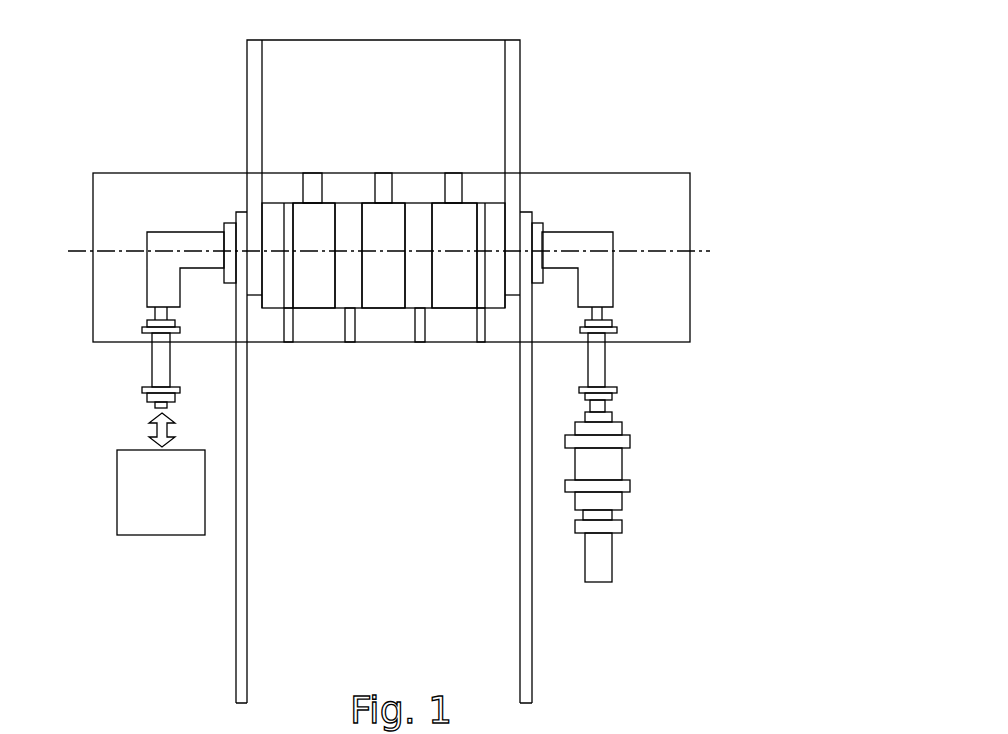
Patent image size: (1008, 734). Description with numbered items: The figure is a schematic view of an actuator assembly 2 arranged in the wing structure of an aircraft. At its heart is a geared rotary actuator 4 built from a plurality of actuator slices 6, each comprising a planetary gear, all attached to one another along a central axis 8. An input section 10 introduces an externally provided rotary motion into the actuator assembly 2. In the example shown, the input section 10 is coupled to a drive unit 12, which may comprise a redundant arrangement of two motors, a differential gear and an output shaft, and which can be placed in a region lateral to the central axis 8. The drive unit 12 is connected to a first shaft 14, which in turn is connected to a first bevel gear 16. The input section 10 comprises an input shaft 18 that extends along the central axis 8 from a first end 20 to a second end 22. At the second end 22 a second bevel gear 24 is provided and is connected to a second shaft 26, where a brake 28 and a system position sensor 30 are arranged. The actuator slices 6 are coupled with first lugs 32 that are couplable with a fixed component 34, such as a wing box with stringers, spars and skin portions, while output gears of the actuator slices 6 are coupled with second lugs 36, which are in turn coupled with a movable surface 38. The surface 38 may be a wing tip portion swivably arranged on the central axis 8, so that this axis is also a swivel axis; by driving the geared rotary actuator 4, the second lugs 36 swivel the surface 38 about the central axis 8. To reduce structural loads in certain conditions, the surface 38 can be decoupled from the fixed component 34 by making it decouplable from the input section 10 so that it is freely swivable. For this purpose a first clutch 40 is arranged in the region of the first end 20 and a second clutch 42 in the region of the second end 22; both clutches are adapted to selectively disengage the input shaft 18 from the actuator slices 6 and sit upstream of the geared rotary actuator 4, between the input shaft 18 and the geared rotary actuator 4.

The actuator assembly 2 is at (594, 72).
The geared rotary actuator 4 is at (487, 130).
The actuator slices 6 is at (308, 300).
The central axis 8 is at (708, 250).
The input section 10 is at (181, 190).
The drive unit 12 is at (130, 492).
The first shaft 14 is at (153, 365).
The first bevel gear 16 is at (158, 271).
The input shaft 18 is at (212, 242).
The first end 20 is at (256, 322).
The second end 22 is at (534, 180).
The second bevel gear 24 is at (603, 237).
The second shaft 26 is at (595, 360).
The brake 28 is at (605, 462).
The system position sensor 30 is at (612, 557).
The first lugs 32 is at (287, 330).
The fixed component 34 is at (507, 330).
The second lugs 36 is at (308, 180).
The movable surface 38 is at (485, 53).
The first clutch 40 is at (270, 212).
The second clutch 42 is at (495, 215).